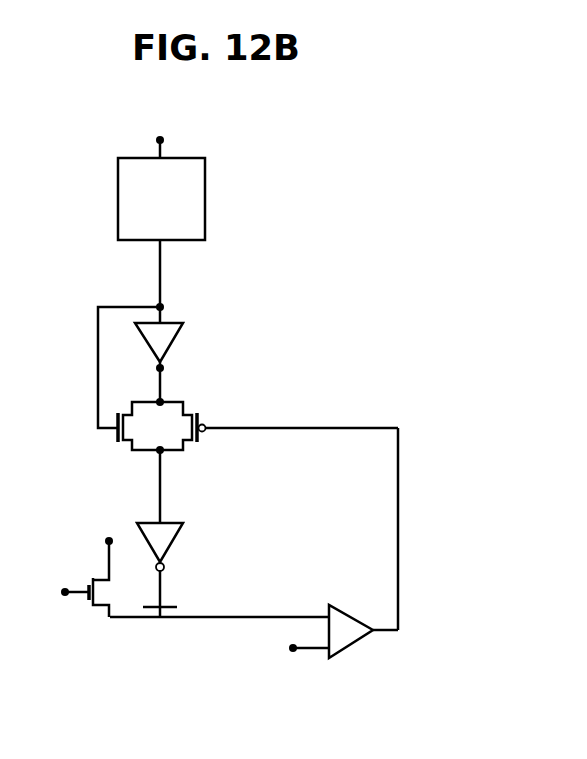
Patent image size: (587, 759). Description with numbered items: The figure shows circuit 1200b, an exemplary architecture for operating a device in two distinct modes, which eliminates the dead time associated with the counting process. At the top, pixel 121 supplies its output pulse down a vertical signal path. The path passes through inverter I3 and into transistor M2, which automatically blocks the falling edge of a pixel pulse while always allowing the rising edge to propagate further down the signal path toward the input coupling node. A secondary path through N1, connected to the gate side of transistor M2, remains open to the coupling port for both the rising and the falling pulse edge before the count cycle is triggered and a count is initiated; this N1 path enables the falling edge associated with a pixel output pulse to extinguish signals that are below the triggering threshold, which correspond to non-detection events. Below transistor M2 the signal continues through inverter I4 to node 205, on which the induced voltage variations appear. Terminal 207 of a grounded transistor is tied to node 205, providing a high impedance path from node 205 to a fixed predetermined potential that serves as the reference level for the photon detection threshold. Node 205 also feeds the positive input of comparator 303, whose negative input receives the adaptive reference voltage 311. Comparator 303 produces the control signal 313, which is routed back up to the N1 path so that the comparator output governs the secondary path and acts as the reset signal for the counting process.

The circuit 1200b is at (160, 128).
The pixel 121 is at (161, 199).
The inverter I3 is at (168, 349).
The transistor M2 is at (127, 428).
The secondary path node N1 is at (302, 408).
The control signal 313 is at (382, 425).
The inverter I4 is at (175, 564).
The node 205 is at (160, 620).
The terminal 207 is at (108, 620).
The comparator 303 is at (353, 648).
The adaptive reference voltage 311 is at (291, 652).